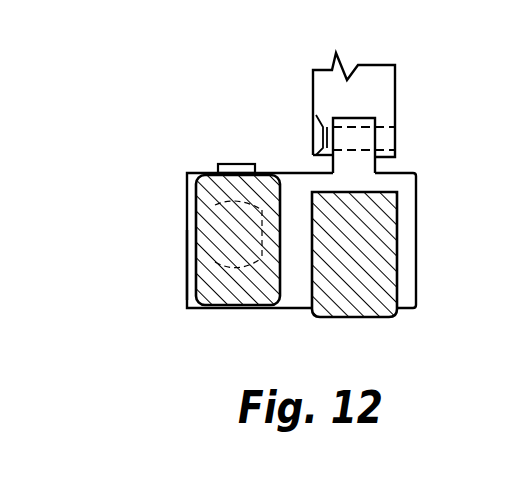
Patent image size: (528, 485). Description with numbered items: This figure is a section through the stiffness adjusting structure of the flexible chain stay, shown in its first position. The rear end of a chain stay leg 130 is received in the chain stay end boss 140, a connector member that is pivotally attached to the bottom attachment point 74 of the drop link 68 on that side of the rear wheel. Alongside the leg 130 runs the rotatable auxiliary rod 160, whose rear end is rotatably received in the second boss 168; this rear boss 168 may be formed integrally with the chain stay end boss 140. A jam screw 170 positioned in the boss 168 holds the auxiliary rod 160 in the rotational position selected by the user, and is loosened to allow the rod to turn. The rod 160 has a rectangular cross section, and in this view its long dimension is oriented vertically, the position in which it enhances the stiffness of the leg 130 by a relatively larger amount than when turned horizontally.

The drop link 68 is at (375, 85).
The bottom attachment point 74 is at (313, 130).
The leg 130 is at (375, 300).
The chain stay end boss 140 is at (405, 245).
The auxiliary rod 160 is at (195, 226).
The second boss 168 is at (187, 270).
The jam screw 170 is at (237, 165).